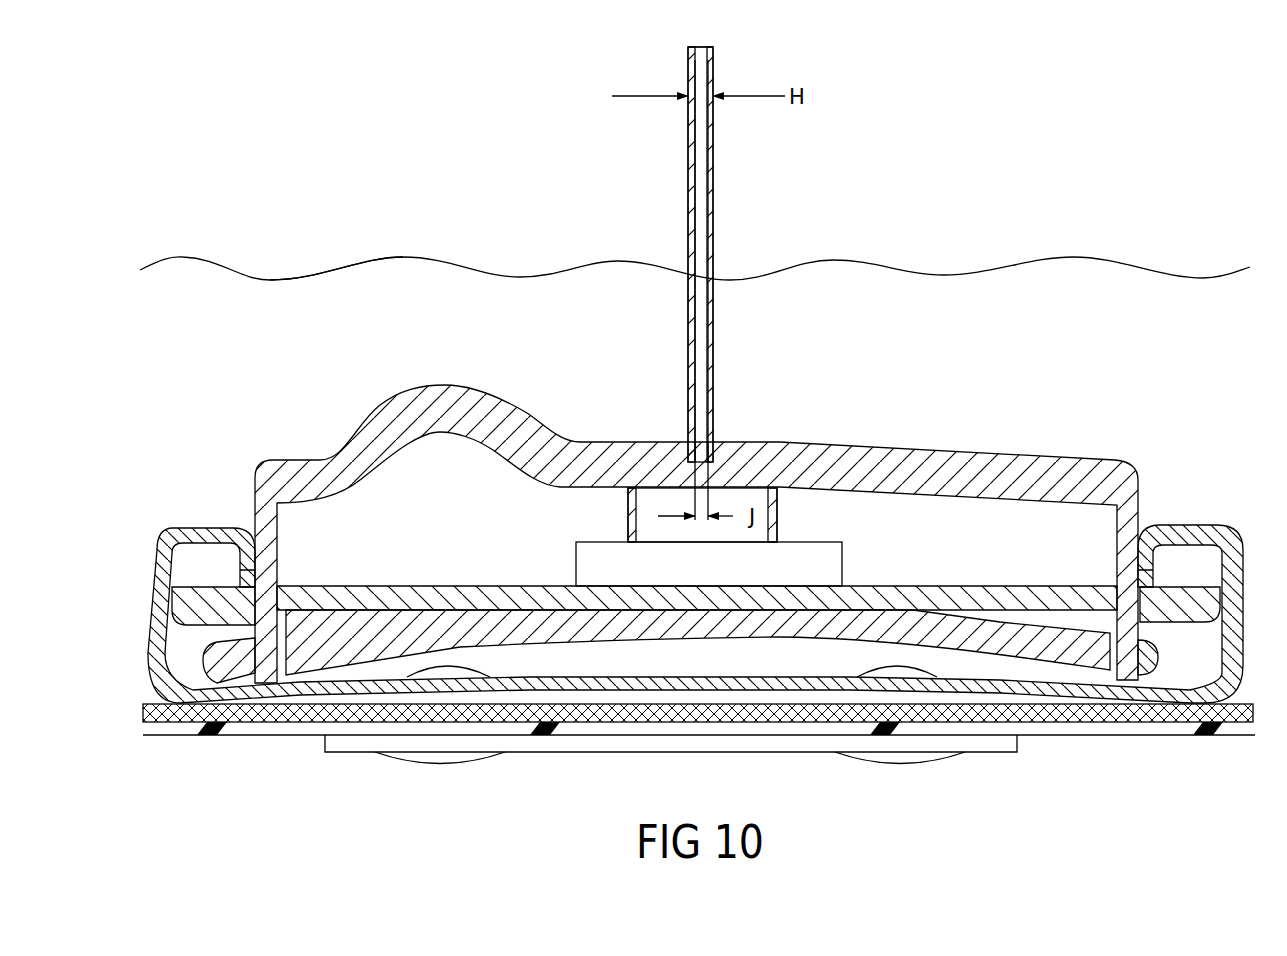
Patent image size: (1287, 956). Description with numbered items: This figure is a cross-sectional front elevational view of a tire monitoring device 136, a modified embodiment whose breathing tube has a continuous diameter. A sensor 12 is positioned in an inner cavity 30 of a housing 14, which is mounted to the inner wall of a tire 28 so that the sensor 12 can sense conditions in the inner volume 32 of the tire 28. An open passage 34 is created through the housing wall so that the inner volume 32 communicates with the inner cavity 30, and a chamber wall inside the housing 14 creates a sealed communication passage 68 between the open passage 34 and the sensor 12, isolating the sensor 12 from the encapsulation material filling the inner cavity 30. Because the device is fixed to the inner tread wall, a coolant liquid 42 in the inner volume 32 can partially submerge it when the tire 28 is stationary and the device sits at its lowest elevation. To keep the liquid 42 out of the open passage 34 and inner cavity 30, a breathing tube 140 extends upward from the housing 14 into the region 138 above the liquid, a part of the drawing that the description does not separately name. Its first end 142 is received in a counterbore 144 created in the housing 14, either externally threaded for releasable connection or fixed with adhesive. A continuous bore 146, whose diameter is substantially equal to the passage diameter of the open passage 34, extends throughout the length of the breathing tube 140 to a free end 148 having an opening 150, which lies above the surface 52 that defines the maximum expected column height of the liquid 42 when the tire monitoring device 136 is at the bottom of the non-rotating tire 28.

The sensor 12 is at (807, 550).
The housing 14 is at (1023, 470).
The tire 28 is at (1102, 727).
The inner cavity 30 is at (1135, 492).
The inner volume 32 is at (434, 337).
The open passage 34 is at (703, 473).
The coolant liquid 42 is at (300, 302).
The surface 52 is at (370, 257).
The sealed communication passage 68 is at (658, 497).
The tire monitoring device 136 is at (1087, 212).
The region above liquid 138 is at (748, 240).
The breathing tube 140 is at (715, 162).
The first end 142 is at (717, 442).
The counterbore 144 is at (690, 452).
The continuous bore 146 is at (690, 218).
The free end 148 is at (690, 153).
The opening 150 is at (700, 46).